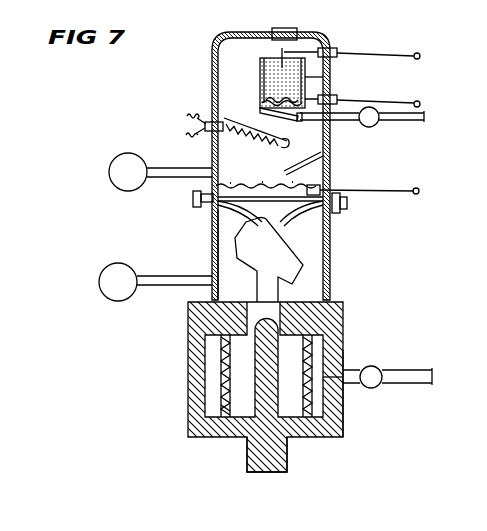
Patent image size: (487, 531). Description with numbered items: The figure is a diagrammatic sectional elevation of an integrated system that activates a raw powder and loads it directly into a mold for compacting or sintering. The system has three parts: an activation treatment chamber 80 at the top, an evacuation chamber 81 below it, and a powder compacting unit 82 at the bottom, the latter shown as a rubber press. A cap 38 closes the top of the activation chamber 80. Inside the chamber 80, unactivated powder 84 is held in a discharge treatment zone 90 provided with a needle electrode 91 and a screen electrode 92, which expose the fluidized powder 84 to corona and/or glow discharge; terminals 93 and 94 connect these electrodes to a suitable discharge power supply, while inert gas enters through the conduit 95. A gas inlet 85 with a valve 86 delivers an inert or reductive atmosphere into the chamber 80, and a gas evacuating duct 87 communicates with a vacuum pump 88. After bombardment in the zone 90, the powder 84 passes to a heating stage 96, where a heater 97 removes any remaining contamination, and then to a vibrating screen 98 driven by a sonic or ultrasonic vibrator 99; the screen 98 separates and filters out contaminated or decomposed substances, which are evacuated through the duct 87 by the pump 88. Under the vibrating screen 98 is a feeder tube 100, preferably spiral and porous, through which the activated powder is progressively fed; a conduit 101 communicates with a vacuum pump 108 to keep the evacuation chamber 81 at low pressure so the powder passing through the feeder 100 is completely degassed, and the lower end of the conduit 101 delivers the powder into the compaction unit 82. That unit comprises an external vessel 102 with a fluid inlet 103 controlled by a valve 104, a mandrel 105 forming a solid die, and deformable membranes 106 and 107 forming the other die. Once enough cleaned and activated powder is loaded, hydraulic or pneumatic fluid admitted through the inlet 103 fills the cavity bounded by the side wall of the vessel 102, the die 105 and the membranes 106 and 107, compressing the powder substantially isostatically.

The activation treatment chamber 80 is at (212, 62).
The cap 38 is at (290, 30).
The needle electrode 91 is at (282, 50).
The screen electrode 92 is at (272, 96).
The unactivated powder 84 is at (282, 83).
The discharge treatment zone 90 is at (323, 77).
The terminal 93 is at (421, 55).
The valve 86 is at (372, 107).
The terminal 94 is at (421, 103).
The gas inlet 85 is at (390, 124).
The heating stage 96 is at (207, 115).
The conduit 95 is at (300, 118).
The heater 97 is at (238, 138).
The sonic or ultrasonic vibrator 99 is at (330, 175).
The vacuum pump 88 is at (134, 153).
The gas evacuating duct 87 is at (201, 168).
The evacuation chamber 81 is at (212, 222).
The vibrating screen 98 is at (292, 184).
The feeder tube 100 is at (236, 245).
The vacuum pump 108 is at (100, 291).
The conduit 101 is at (190, 284).
The powder compacting unit 82 is at (188, 349).
The fluid inlet 103 is at (351, 368).
The valve 104 is at (378, 366).
The deformable membrane 106 is at (230, 390).
The deformable membrane 107 is at (222, 408).
The external vessel 102 is at (343, 415).
The mandrel 105 is at (266, 472).